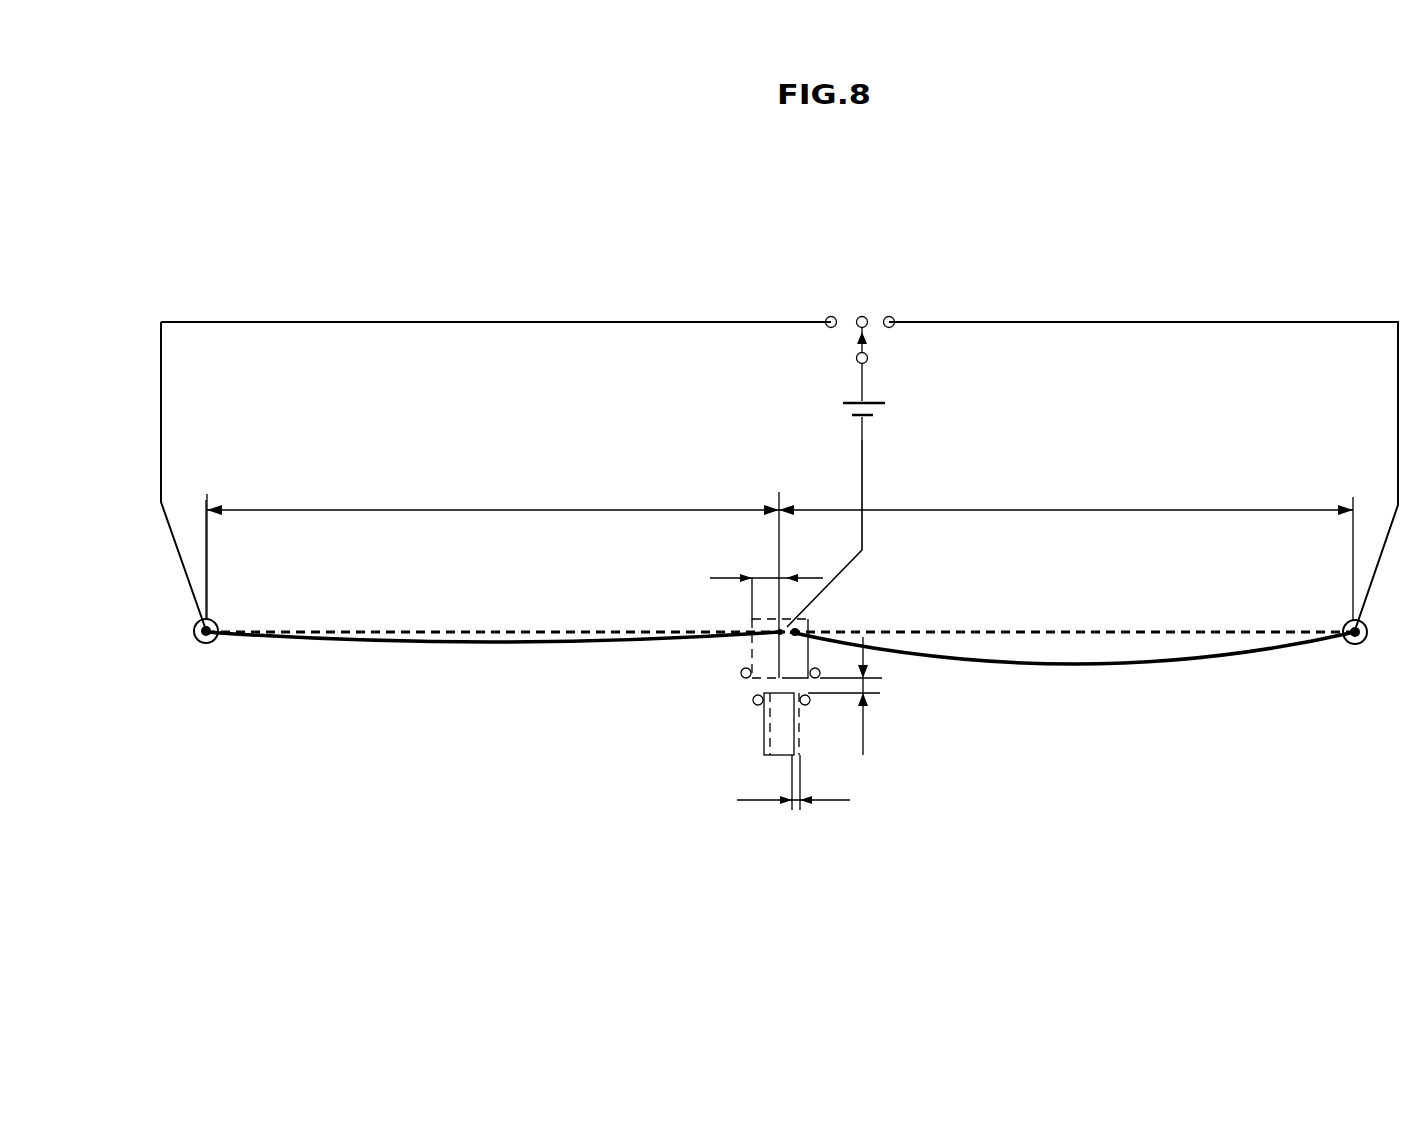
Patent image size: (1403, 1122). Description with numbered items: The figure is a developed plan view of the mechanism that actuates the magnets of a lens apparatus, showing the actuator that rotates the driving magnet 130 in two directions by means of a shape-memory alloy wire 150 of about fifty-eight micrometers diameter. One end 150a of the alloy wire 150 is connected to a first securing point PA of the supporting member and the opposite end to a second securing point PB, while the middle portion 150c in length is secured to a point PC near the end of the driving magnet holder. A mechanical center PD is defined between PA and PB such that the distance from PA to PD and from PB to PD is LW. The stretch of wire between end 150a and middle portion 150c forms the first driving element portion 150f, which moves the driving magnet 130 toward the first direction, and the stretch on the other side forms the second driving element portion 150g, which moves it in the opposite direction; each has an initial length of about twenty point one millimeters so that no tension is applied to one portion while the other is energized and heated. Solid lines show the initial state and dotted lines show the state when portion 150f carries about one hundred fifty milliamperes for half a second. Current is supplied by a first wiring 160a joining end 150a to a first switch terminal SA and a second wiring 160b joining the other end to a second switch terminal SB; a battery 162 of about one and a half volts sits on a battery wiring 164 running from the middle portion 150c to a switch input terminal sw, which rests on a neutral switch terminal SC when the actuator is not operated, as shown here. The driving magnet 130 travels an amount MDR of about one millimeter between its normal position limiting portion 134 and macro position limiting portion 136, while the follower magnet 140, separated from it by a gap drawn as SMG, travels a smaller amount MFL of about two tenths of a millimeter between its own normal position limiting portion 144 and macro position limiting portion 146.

The first wiring 160a is at (383, 320).
The second wiring 160b is at (1192, 321).
The first switch terminal SA is at (828, 318).
The second switch terminal SB is at (892, 317).
The neutral switch terminal SC is at (862, 316).
The switch input terminal sw is at (869, 356).
The battery 162 is at (887, 405).
The battery wiring 164 is at (864, 460).
The alloy wire 150 is at (1358, 648).
The one end of the alloy wire 150a is at (203, 645).
The middle portion of the alloy wire 150c is at (782, 627).
The first driving element portion 150f is at (357, 643).
The second driving element portion 150g is at (1128, 667).
The first securing point PA is at (214, 621).
The second securing point PB is at (1348, 622).
The securing point near the end of the driving magnet holder PC is at (797, 633).
The mechanical center PD is at (778, 632).
The distance between securing point and mechanical center LW is at (780, 577).
The amount of movement of the driving magnet MDR is at (752, 576).
The driving magnet 130 is at (775, 657).
The normal position limiting portion 134 is at (821, 675).
The macro position limiting portion 136 is at (742, 678).
The gap SMG is at (877, 694).
The follower magnet 140 is at (783, 757).
The normal position limiting portion 144 is at (755, 706).
The macro position limiting portion 146 is at (808, 706).
The amount of movement of the follower magnet MFL is at (800, 808).